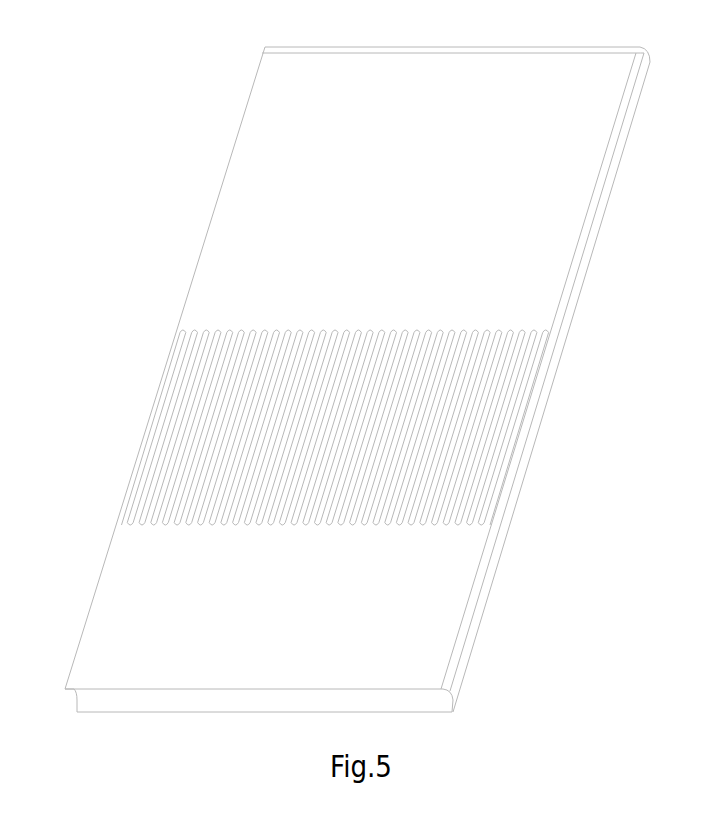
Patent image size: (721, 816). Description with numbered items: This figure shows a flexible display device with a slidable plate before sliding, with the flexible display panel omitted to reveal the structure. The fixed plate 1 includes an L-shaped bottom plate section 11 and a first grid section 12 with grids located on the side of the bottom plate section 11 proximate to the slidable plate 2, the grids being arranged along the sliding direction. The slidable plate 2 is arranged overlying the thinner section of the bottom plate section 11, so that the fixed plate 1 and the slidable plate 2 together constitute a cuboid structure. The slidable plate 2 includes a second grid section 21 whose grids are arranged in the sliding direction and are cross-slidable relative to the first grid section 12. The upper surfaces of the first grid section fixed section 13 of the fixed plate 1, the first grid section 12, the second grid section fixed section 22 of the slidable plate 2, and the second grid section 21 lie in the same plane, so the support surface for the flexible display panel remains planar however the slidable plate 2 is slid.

The fixed plate 1 is at (457, 657).
The bottom plate section 11 is at (557, 357).
The first grid section 12 is at (305, 523).
The first grid section fixed section 13 is at (148, 585).
The slidable plate 2 is at (600, 50).
The second grid section 21 is at (370, 330).
The second grid section fixed section 22 is at (260, 198).